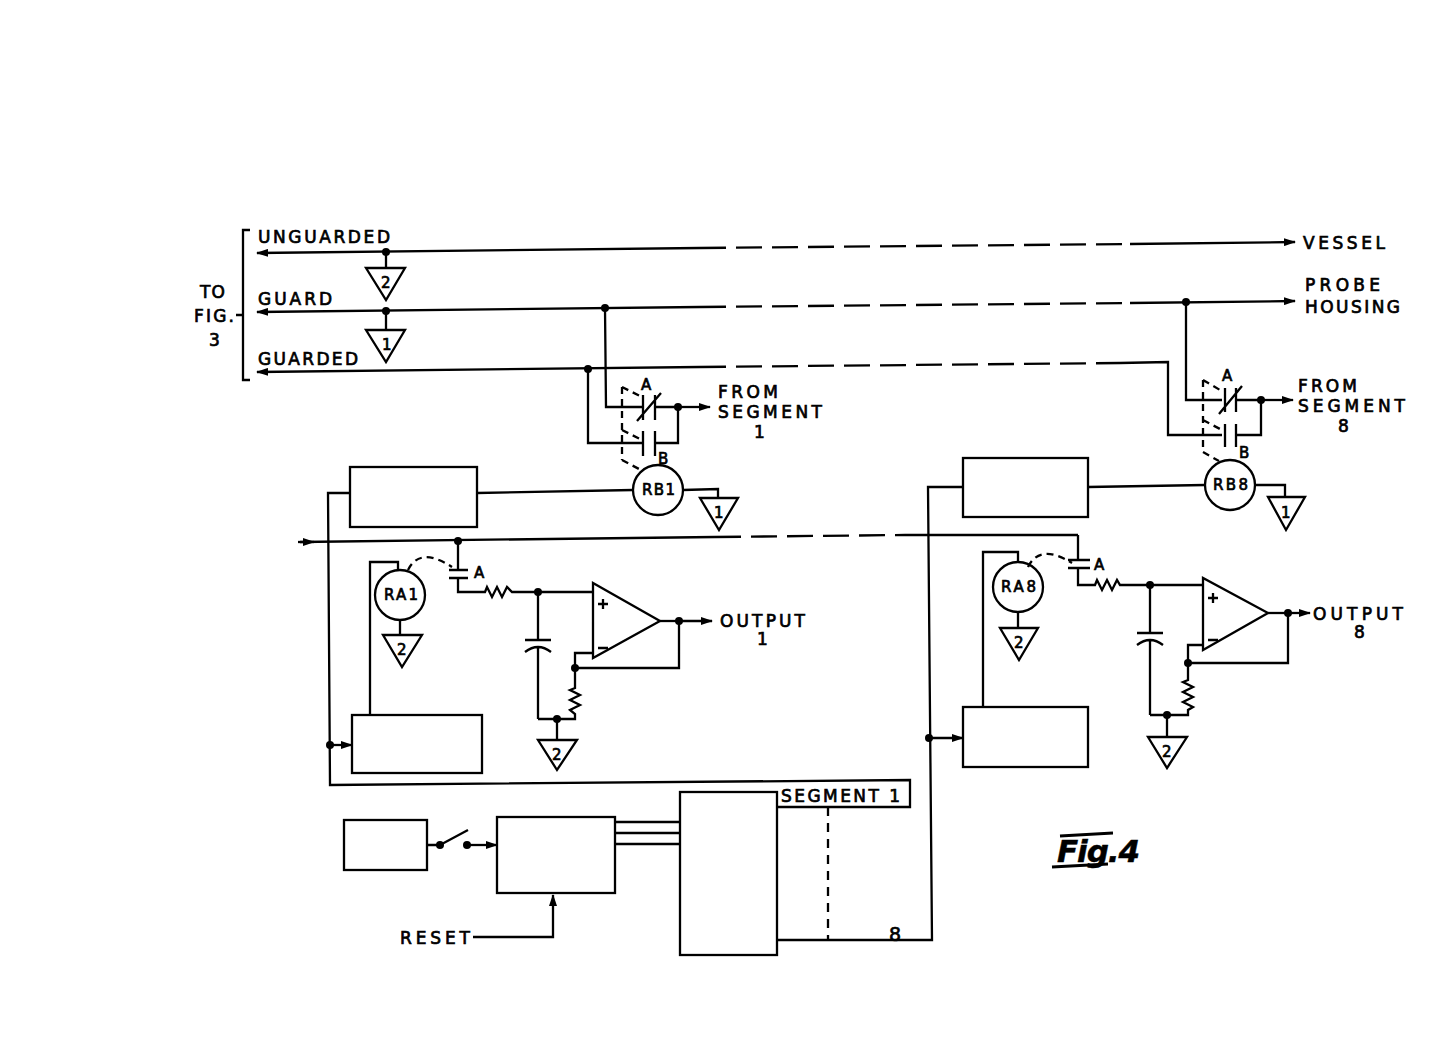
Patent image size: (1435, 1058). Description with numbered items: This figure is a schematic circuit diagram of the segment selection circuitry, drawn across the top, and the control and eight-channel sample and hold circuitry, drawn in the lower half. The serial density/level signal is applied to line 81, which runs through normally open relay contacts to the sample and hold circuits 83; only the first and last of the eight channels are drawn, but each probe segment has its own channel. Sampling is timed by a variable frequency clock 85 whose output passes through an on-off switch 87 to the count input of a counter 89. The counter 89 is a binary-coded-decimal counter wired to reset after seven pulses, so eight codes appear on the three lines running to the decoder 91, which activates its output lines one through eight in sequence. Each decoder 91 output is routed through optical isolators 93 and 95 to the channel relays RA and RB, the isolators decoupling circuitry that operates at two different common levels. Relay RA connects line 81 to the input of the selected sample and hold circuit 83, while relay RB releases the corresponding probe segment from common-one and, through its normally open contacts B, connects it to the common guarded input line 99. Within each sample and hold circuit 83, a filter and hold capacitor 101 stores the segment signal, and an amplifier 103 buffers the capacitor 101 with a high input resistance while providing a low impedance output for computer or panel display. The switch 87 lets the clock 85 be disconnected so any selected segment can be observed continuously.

The line 81 is at (306, 541).
The sample and hold circuits 83 is at (592, 686).
The clock 85 is at (380, 820).
The on-off switch 87 is at (450, 827).
The counter 89 is at (541, 817).
The decoder 91 is at (680, 804).
The optical isolator 93 is at (426, 714).
The optical isolator 95 is at (415, 467).
The common guarded input line 99 is at (437, 370).
The filter and hold capacitors 101 is at (532, 640).
The amplifiers 103 is at (629, 600).